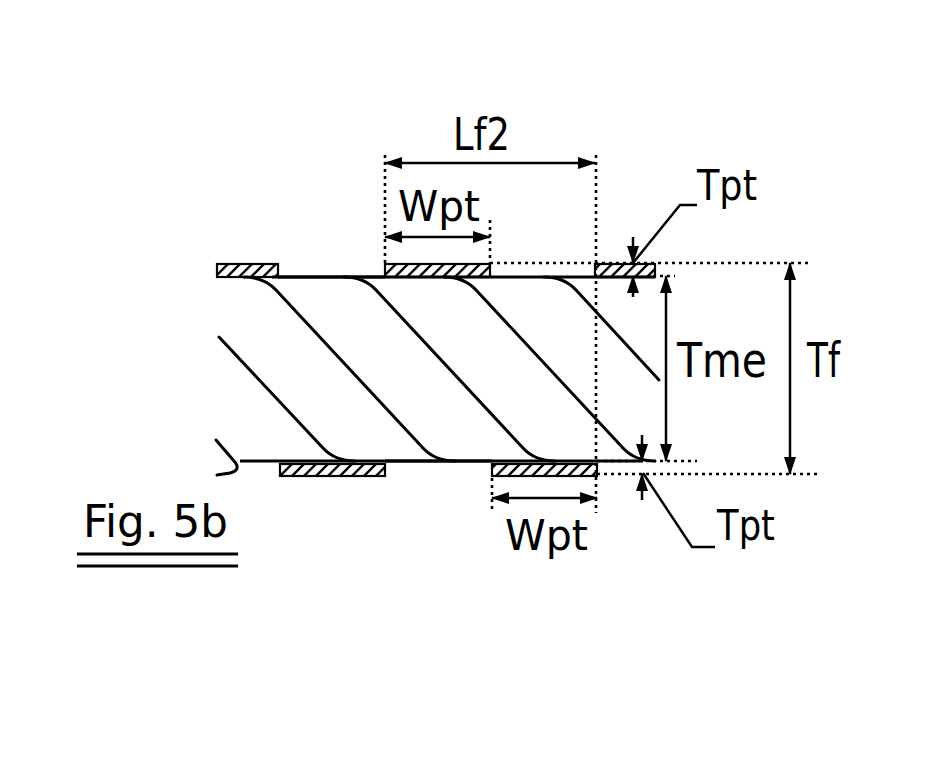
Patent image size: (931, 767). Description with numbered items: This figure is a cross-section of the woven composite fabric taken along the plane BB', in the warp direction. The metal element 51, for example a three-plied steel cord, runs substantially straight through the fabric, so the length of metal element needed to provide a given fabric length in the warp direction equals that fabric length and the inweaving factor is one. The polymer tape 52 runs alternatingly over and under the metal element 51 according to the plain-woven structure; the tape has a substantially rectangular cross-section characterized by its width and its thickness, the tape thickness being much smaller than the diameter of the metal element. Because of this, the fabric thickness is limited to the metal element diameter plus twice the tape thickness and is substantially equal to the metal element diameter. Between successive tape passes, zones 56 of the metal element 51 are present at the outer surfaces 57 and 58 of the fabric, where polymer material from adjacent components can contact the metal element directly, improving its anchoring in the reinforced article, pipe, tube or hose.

The metal element 51 is at (297, 370).
The polymer tape 52 is at (484, 229).
The zones of the metal elements 56 is at (317, 255).
The outer surface of the fabric 57 is at (537, 587).
The outer surface of the fabric 58 is at (519, 97).